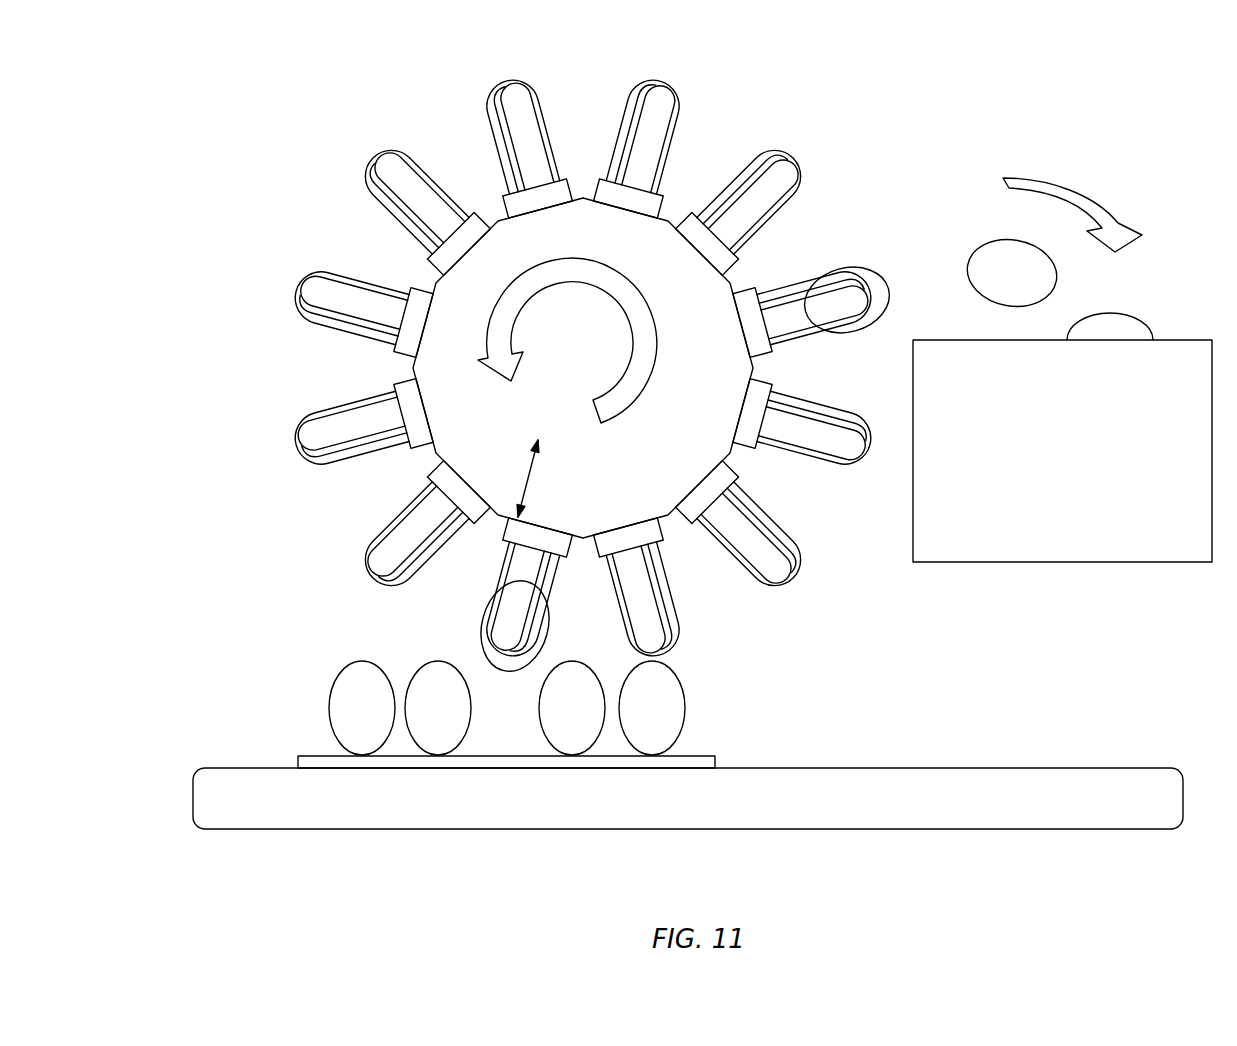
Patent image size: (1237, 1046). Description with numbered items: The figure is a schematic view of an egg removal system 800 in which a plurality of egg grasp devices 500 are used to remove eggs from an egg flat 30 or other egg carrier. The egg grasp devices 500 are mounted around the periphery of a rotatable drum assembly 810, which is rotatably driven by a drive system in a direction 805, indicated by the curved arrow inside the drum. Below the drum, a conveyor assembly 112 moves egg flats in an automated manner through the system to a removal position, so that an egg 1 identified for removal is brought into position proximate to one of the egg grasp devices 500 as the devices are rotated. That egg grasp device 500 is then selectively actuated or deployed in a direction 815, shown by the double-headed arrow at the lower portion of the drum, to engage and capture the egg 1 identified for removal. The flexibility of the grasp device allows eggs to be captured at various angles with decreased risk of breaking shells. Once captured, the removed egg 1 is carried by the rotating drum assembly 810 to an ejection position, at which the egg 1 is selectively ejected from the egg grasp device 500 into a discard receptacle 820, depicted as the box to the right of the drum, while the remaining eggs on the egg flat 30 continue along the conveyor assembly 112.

The egg 1 is at (350, 680).
The egg flat 30 is at (308, 760).
The conveyor assembly 112 is at (246, 814).
The egg grasp device 500 is at (807, 258).
The egg removal system 800 is at (299, 128).
The direction of rotation 805 is at (660, 343).
The rotatable drum assembly 810 is at (581, 230).
The deployment direction 815 is at (530, 487).
The discard receptacle 820 is at (1130, 535).